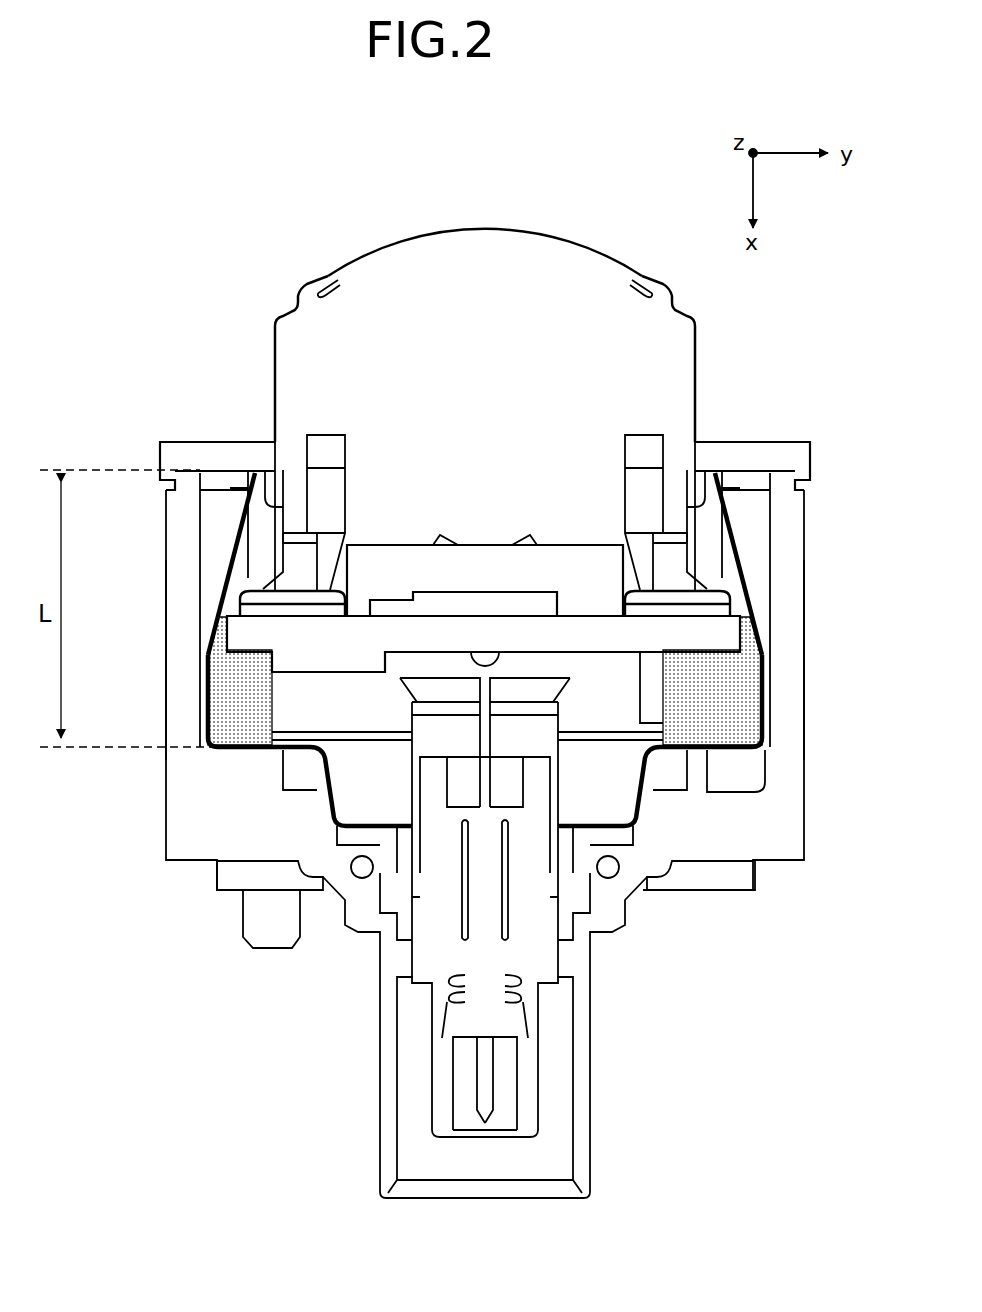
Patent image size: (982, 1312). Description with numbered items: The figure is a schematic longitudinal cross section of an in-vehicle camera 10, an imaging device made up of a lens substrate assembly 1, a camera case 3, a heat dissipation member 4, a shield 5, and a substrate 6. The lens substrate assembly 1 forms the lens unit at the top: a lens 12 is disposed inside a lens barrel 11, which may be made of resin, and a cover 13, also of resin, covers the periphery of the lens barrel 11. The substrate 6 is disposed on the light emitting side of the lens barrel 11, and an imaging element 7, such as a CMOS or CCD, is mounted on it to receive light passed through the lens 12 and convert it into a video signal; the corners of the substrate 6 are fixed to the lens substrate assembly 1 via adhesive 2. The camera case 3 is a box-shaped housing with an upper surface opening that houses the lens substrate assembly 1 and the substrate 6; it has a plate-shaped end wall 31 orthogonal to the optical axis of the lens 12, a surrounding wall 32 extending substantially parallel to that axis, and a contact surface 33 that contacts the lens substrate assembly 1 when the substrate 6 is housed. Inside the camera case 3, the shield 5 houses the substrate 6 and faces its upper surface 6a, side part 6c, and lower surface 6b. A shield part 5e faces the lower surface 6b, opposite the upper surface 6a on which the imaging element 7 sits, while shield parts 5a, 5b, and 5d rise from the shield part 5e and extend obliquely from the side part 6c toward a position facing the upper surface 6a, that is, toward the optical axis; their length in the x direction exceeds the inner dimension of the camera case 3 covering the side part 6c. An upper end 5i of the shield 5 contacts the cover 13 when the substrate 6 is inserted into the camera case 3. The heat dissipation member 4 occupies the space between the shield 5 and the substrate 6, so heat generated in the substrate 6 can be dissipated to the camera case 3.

The lens substrate assembly 1 is at (455, 312).
The adhesive 2 is at (255, 606).
The camera case 3 is at (495, 834).
The heat dissipation member 4 is at (235, 692).
The shield 5 is at (495, 596).
The shield part 5a is at (230, 540).
The shield part 5b is at (745, 577).
The shield part 5d is at (222, 527).
The shield part 5e is at (247, 748).
The upper end of the shield 5i is at (275, 470).
The substrate 6 is at (495, 666).
The upper surface 6a is at (767, 600).
The lower surface 6b is at (705, 665).
The side part 6c is at (230, 630).
The imaging element 7 is at (473, 603).
The in-vehicle camera 10 is at (305, 250).
The lens barrel 11 is at (275, 345).
The lens 12 is at (420, 241).
The cover 13 is at (486, 422).
The end wall 31 is at (195, 850).
The surrounding wall 32 is at (183, 677).
The contact surface 33 is at (162, 446).